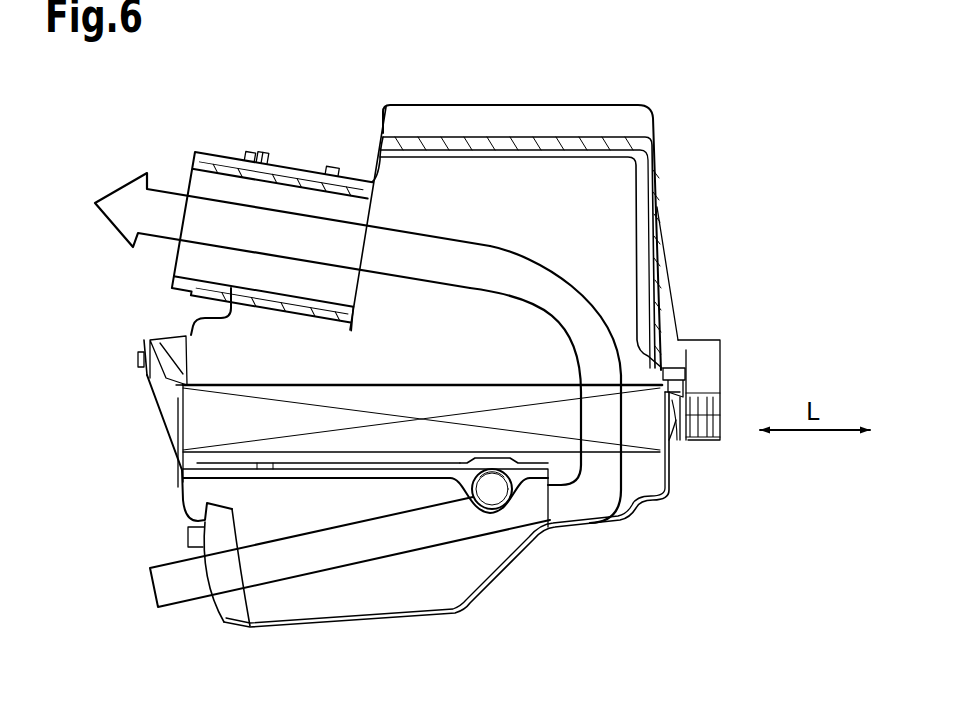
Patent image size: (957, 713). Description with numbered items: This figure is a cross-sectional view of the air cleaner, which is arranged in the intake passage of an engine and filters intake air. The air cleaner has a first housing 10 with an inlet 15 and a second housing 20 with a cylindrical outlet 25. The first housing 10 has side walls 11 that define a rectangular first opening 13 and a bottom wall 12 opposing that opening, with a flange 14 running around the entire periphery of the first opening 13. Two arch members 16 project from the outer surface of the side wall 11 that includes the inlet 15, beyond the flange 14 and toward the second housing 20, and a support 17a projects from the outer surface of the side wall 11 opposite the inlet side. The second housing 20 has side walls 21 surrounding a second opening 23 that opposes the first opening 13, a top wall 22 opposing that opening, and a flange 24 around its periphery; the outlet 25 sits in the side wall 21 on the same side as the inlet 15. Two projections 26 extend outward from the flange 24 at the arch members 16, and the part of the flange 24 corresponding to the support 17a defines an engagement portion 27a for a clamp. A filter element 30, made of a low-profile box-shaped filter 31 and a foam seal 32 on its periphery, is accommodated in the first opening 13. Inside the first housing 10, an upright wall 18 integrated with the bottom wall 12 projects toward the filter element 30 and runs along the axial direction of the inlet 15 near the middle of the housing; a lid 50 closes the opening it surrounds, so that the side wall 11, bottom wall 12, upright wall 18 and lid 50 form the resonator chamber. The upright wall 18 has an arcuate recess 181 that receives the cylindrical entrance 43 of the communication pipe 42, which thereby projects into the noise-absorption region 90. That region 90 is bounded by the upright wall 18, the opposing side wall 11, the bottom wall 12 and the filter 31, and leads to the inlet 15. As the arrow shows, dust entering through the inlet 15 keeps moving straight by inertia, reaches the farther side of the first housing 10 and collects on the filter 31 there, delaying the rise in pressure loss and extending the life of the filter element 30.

The first housing 10 is at (622, 535).
The side walls 11 is at (172, 465).
The bottom wall 12 is at (330, 627).
The first opening 13 is at (190, 390).
The flange 14 is at (671, 447).
The inlet 15 is at (236, 627).
The arch members 16 is at (150, 335).
The support 17a is at (690, 437).
The upright wall 18 is at (414, 572).
The arcuate recess 181 is at (481, 513).
The second housing 20 is at (660, 103).
The side walls 21 is at (660, 205).
The top wall 22 is at (522, 137).
The second opening 23 is at (190, 366).
The flange 24 is at (684, 368).
The outlet 25 is at (243, 163).
The projections 26 is at (136, 360).
The engagement portion 27a is at (722, 340).
The filter element 30 is at (422, 382).
The filter 31 is at (378, 400).
The seal 32 is at (712, 384).
The communication pipe 42 is at (492, 474).
The entrance 43 is at (536, 538).
The lid 50 is at (495, 460).
The noise-absorption region 90 is at (298, 527).